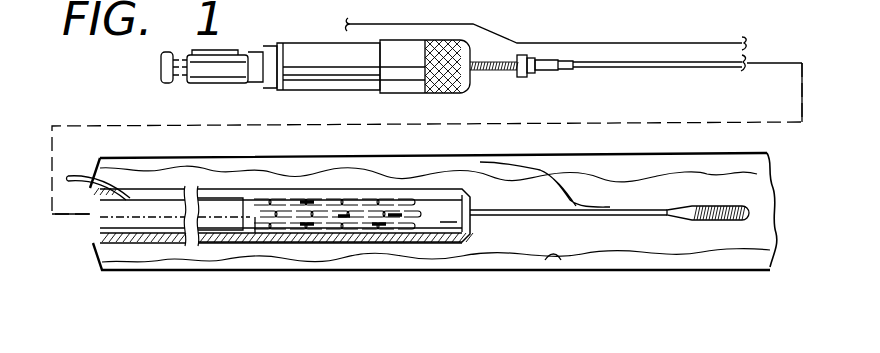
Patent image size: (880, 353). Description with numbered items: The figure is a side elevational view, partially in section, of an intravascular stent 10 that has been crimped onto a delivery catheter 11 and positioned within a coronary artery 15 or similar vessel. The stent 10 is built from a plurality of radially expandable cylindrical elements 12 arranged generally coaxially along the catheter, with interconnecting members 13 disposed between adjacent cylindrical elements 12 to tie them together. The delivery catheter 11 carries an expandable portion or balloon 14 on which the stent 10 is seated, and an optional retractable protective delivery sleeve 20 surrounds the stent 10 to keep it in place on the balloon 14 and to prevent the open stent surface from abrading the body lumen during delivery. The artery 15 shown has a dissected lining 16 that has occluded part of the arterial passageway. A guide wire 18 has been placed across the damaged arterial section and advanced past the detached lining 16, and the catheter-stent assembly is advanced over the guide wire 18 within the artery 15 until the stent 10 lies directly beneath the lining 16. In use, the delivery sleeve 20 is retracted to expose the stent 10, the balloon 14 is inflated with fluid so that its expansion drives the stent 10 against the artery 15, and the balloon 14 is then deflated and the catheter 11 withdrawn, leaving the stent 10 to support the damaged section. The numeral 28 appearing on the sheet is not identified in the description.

The intravascular stent 10 is at (270, 210).
The delivery catheter 11 is at (618, 68).
The radially expandable cylindrical elements 12 is at (375, 198).
The interconnecting members 13 is at (312, 200).
The balloon 14 is at (255, 243).
The coronary artery 15 is at (560, 257).
The dissected lining 16 is at (562, 200).
The guide wire 18 is at (637, 210).
The retractable protective delivery sleeve 20 is at (278, 237).
The unlabeled numeral 28 is at (619, 345).